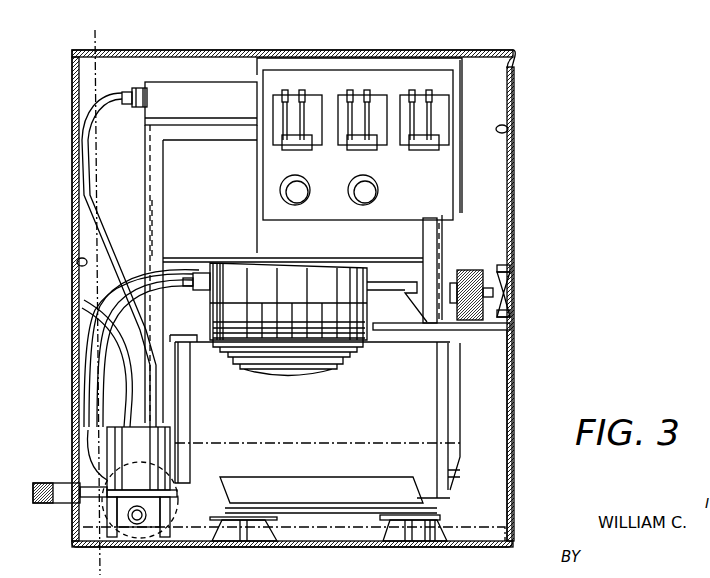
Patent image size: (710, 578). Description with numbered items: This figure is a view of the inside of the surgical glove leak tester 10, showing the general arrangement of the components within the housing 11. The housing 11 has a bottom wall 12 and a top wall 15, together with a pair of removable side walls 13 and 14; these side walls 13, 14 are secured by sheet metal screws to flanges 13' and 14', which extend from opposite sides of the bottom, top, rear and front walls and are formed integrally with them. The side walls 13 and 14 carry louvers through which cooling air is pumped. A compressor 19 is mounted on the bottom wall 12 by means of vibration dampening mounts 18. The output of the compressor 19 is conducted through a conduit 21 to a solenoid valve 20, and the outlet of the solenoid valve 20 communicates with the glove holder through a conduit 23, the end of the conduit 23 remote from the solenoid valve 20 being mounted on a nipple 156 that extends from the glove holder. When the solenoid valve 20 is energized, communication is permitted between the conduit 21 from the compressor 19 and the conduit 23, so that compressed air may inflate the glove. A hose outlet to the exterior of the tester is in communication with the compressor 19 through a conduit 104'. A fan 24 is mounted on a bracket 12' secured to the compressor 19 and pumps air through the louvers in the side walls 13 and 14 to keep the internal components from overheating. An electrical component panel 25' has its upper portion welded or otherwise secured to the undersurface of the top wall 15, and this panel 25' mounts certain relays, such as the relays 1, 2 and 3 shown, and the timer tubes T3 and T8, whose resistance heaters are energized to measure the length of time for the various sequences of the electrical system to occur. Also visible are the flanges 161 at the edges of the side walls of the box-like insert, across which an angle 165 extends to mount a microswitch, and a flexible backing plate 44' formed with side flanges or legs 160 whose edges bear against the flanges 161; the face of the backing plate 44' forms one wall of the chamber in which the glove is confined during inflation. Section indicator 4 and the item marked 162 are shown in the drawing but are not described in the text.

The section line 4- 4 is at (118, 38).
The leak tester 10 is at (541, 76).
The housing 11 is at (517, 258).
The bottom wall 12 is at (292, 552).
The bracket 12' is at (441, 344).
The side wall 13 is at (533, 304).
The flange 13' is at (529, 95).
The side wall 14 is at (60, 299).
The flange 14' is at (67, 397).
The top wall 15 is at (238, 52).
The vibration dampening mounts 18 is at (437, 523).
The compressor 19 is at (460, 413).
The solenoid valve 20 is at (158, 443).
The conduit 21 is at (167, 280).
The conduit 23 is at (93, 188).
The fan 24 is at (482, 316).
The electrical component panel 25' is at (381, 145).
The flexible backing plate 44' is at (303, 155).
The conduit 104' is at (80, 390).
The nipple 156 is at (133, 89).
The side flanges or legs 160 is at (144, 203).
The flanges 161 is at (160, 223).
The flange 162 is at (153, 182).
The angle 165 is at (207, 260).
The relay 1 is at (313, 102).
The relay 2 is at (378, 102).
The relay 3 is at (440, 102).
The timer tube T3 is at (304, 187).
The timer tube T8 is at (366, 187).